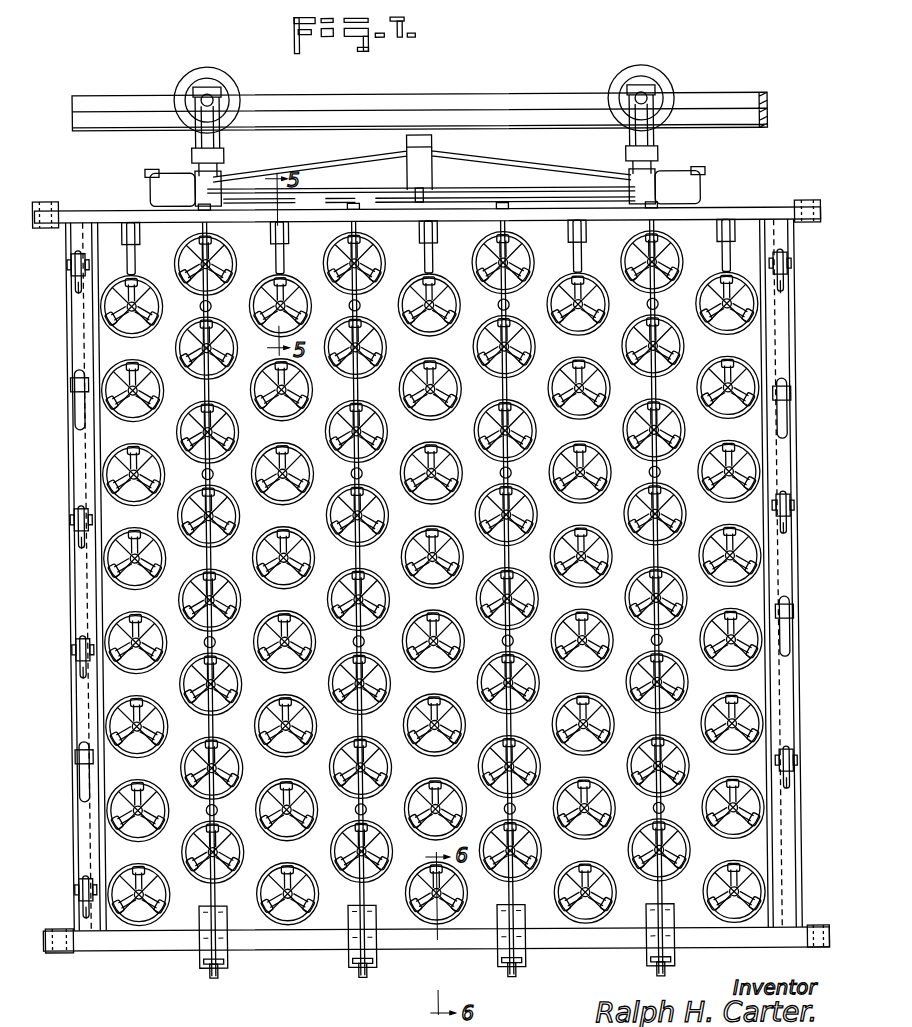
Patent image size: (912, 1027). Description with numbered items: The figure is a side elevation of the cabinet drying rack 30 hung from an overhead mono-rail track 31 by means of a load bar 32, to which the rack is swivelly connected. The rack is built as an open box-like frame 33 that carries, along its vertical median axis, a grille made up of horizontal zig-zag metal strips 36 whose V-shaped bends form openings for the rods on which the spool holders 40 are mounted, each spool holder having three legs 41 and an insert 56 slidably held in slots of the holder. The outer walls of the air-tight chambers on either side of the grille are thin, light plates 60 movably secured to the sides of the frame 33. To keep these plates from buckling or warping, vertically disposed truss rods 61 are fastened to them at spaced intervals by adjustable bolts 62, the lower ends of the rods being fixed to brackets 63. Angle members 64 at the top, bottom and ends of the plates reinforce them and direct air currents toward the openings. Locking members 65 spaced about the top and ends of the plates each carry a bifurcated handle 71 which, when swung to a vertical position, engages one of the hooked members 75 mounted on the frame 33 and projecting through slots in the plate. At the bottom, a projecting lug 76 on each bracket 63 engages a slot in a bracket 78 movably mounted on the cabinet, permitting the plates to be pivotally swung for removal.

The cabinet drying rack 30 is at (122, 200).
The mono-rail track 31 is at (104, 106).
The load bar 32 is at (474, 163).
The box-like frame 33 is at (68, 190).
The metal strips 36 is at (535, 440).
The spool holders 40 is at (428, 330).
The legs 41 is at (511, 356).
The insert 56 is at (590, 332).
The plates 60 is at (115, 437).
The truss rods 61 is at (213, 560).
The adjustable bolts 62 is at (215, 473).
The brackets 63 is at (205, 925).
The angle members 64 is at (762, 213).
The locking members 65 is at (67, 276).
The bifurcated handle 71 is at (80, 310).
The hooked members 75 is at (77, 400).
The projecting lug 76 is at (209, 978).
The bracket 78 is at (519, 962).